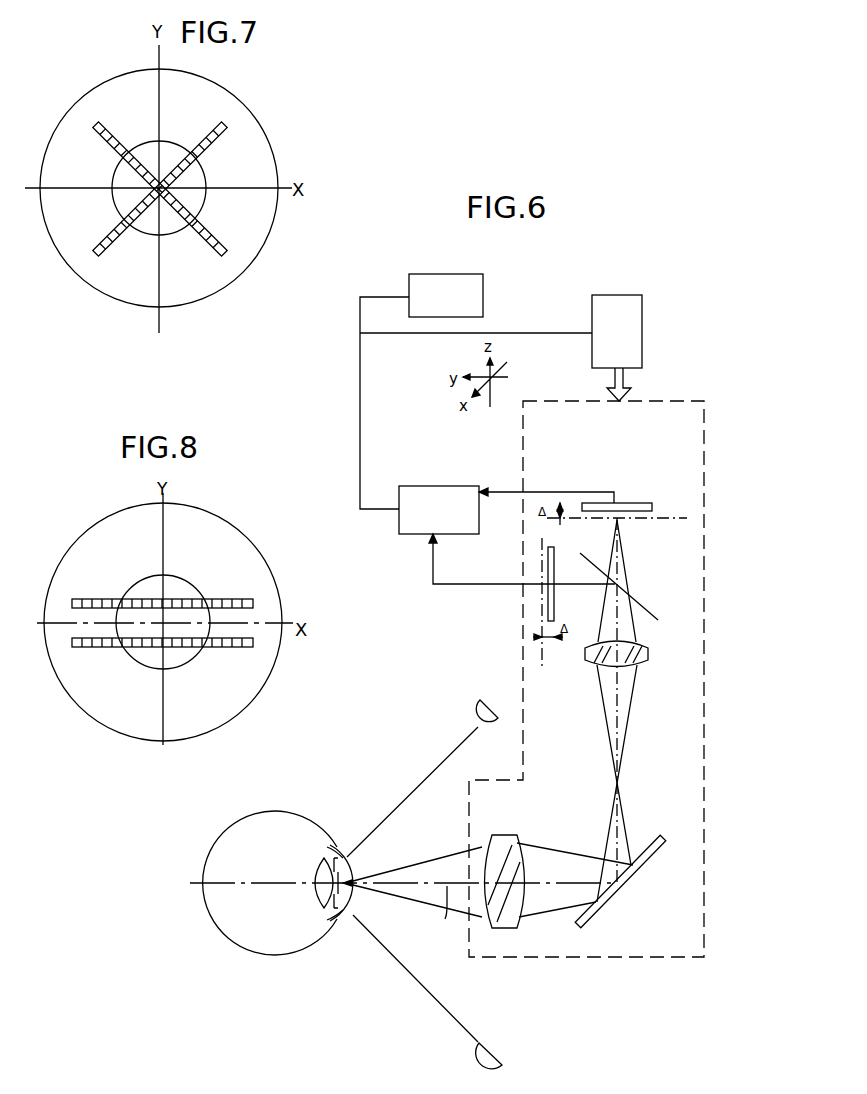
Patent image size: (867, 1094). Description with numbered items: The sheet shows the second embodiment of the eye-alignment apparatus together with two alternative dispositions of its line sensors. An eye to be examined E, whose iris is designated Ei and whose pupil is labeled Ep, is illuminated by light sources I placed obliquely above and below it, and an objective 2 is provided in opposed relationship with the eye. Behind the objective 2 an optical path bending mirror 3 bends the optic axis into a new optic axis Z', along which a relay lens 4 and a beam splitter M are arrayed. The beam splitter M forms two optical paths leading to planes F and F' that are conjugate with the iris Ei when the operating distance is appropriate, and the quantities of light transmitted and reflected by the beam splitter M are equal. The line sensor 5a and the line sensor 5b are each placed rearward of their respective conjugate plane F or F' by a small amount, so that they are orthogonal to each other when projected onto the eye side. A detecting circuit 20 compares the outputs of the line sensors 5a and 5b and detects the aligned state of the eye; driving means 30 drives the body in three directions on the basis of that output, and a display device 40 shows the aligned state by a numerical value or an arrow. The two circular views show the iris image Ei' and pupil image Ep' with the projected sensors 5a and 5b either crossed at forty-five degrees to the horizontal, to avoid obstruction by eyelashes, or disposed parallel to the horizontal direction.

In FIG. 6, the display device 40 is at (462, 283).
In FIG. 6, the driving means 30 is at (633, 335).
In FIG. 6, the detecting circuit 20 is at (430, 497).
In FIG. 7, the line sensor 5a is at (226, 252).
In FIG. 8, the line sensor 5a is at (253, 600).
In FIG. 6, the line sensor 5a is at (637, 503).
In FIG. 7, the line sensor 5b is at (224, 127).
In FIG. 8, the line sensor 5b is at (253, 647).
In FIG. 6, the line sensor 5b is at (554, 549).
In FIG. 6, the relay lens 4 is at (648, 651).
In FIG. 6, the objective 2 is at (505, 835).
In FIG. 6, the optical path bending mirror 3 is at (633, 872).
In FIG. 6, the beam splitter M is at (652, 612).
In FIG. 6, the conjugate plane F is at (617, 542).
In FIG. 6, the conjugate plane F' is at (554, 613).
In FIG. 6, the light source I is at (492, 703).
In FIG. 6, the eye to be examined E is at (225, 832).
In FIG. 6, the iris Ei is at (343, 855).
In FIG. 6, the pupil Ep is at (341, 922).
In FIG. 6, the optic axis Z' is at (439, 912).
In FIG. 7, the iris image Ei' is at (175, 188).
In FIG. 8, the iris image Ei' is at (145, 622).
In FIG. 7, the pupil image Ep' is at (164, 236).
In FIG. 8, the pupil image Ep' is at (153, 602).